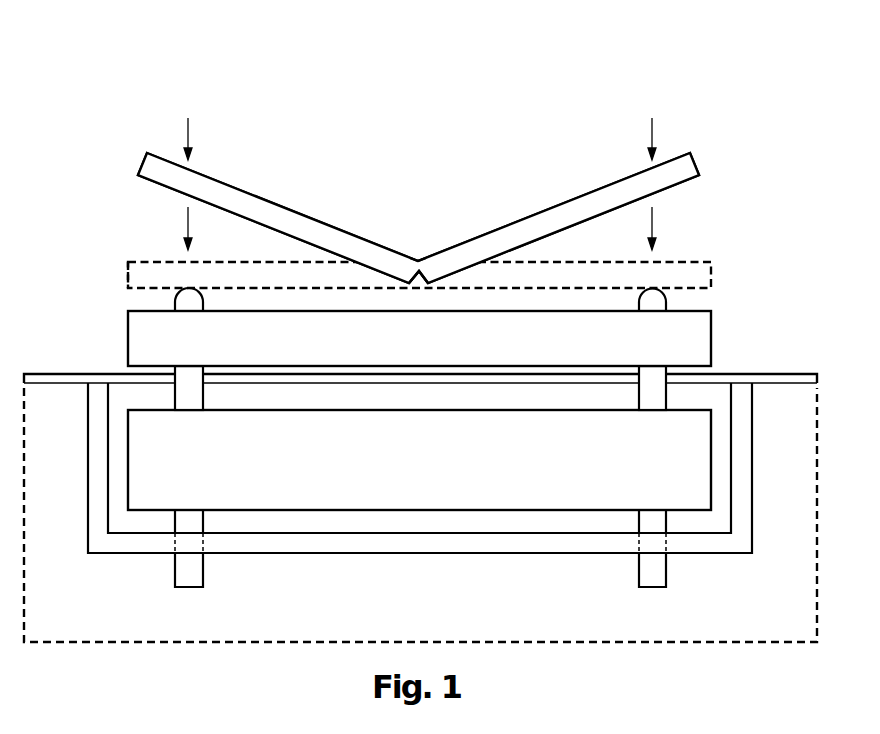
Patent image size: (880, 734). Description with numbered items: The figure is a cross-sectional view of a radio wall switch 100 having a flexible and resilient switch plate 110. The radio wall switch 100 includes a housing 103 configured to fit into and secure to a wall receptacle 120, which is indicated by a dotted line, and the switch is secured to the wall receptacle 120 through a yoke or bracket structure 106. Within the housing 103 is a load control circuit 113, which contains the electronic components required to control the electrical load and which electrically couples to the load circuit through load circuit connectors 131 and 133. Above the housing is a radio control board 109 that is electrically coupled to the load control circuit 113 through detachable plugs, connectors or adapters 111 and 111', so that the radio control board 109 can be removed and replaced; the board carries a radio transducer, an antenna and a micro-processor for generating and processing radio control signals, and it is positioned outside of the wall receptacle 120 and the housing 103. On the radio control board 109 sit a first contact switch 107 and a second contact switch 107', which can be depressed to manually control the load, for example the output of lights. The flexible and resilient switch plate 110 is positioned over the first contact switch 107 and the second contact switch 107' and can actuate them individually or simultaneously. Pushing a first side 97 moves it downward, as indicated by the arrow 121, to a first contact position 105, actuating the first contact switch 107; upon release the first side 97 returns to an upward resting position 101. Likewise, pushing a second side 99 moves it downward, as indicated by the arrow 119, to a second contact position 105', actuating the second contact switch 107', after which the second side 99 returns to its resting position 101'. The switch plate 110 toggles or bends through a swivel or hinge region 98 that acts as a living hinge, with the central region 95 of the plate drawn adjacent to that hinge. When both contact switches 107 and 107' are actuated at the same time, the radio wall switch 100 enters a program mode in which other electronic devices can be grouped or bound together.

The radio wall switch 100 is at (150, 104).
The flexible and resilient switch plate 110 is at (512, 182).
The resting position 101 is at (595, 213).
The resting position 101' is at (241, 213).
The swivel or hinge region 98 is at (418, 259).
The notch 95 is at (410, 280).
The second side 99 is at (188, 128).
The first side 97 is at (653, 128).
The arrow 119 is at (188, 222).
The arrow 121 is at (652, 222).
The first contact position 105 is at (469, 272).
The second contact position 105' is at (79, 265).
The first contact switch 107 is at (116, 298).
The second contact switch 107' is at (728, 304).
The radio control board 109 is at (128, 339).
The detachable plug, connector or adapter 111 is at (117, 388).
The detachable plug, connector or adapter 111' is at (686, 388).
The load control circuit 113 is at (143, 452).
The yoke or bracket structure 106 is at (783, 385).
The housing 103 is at (754, 468).
The load circuit connector 131 is at (204, 577).
The load circuit connector 133 is at (667, 577).
The wall receptacle 120 is at (278, 643).